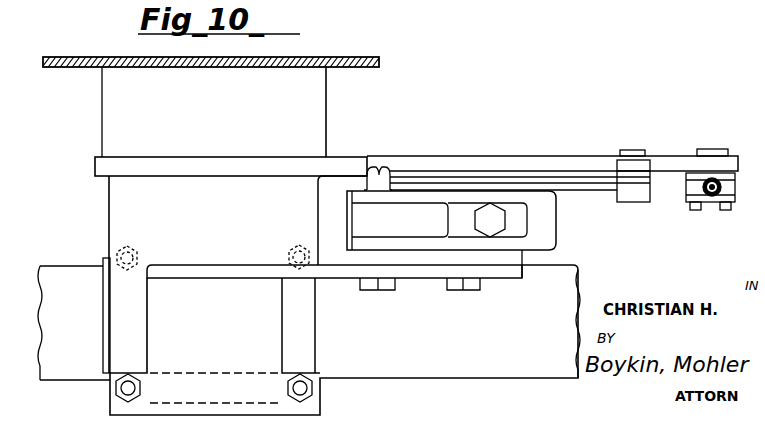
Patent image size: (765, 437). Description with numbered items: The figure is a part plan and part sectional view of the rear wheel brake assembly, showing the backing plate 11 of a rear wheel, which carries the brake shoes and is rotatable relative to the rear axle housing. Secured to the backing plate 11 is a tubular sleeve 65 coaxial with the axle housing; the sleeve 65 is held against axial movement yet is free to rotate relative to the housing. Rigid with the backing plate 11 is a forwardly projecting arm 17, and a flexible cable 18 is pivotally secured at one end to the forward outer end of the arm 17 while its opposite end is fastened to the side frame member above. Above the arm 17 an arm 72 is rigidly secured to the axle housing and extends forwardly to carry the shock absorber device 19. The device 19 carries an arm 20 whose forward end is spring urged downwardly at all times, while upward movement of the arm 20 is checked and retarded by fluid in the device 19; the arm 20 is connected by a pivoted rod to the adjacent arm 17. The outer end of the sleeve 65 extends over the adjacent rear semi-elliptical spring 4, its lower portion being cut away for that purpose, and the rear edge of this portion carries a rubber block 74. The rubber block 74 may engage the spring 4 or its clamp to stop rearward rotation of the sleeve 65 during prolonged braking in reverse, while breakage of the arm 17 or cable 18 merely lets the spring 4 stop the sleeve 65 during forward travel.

The backing plate 11 is at (366, 69).
The tubular sleeve 65 is at (312, 118).
The arm 17 is at (483, 166).
The arm 20 is at (535, 181).
The shock absorber device 19 is at (545, 225).
The flexible cable 18 is at (713, 197).
The arm 72 is at (423, 274).
The rear semi-elliptical spring 4 is at (362, 371).
The rubber block 74 is at (108, 301).